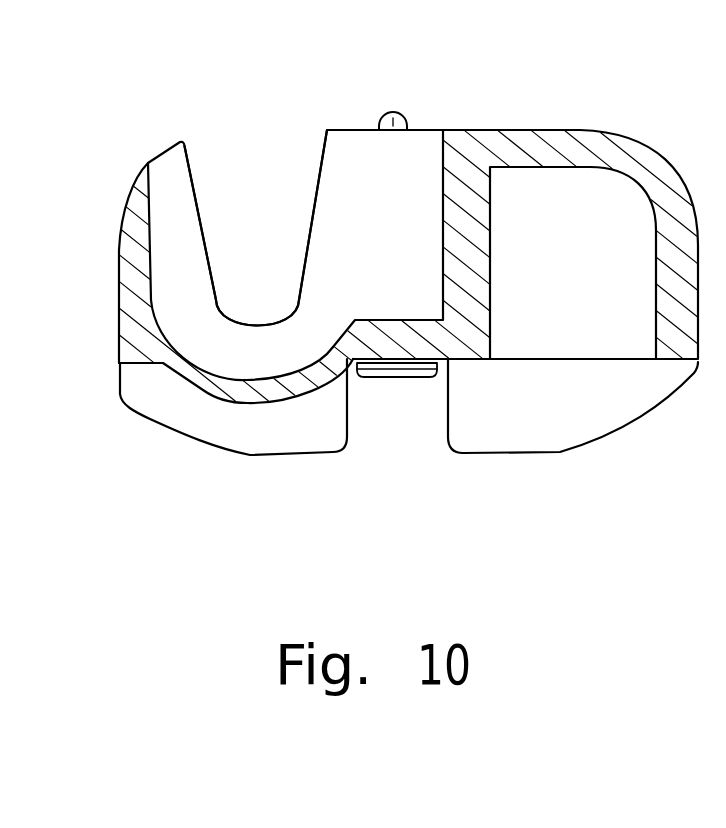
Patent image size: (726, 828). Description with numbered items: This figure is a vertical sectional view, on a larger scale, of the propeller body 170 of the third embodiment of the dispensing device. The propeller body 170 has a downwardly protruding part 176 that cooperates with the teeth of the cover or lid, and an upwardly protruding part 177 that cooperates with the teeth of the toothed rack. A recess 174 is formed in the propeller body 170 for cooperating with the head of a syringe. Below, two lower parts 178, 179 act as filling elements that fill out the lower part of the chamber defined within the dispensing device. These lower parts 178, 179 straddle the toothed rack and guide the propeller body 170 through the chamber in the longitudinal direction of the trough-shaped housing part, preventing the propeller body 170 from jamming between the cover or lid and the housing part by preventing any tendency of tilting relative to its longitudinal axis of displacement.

The propeller body 170 is at (490, 122).
The recess 174 is at (238, 228).
The downwardly protruding part 176 is at (393, 377).
The upwardly protruding part 177 is at (391, 112).
The lower part 178 is at (192, 423).
The lower part 179 is at (578, 410).